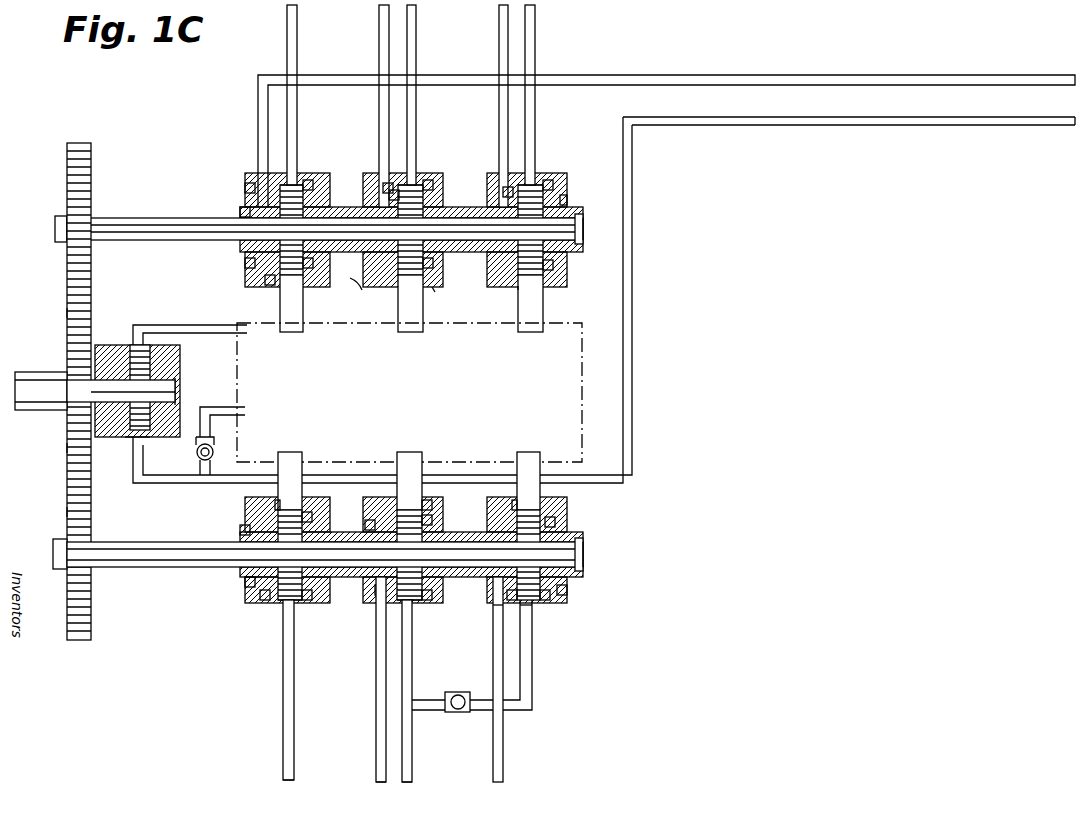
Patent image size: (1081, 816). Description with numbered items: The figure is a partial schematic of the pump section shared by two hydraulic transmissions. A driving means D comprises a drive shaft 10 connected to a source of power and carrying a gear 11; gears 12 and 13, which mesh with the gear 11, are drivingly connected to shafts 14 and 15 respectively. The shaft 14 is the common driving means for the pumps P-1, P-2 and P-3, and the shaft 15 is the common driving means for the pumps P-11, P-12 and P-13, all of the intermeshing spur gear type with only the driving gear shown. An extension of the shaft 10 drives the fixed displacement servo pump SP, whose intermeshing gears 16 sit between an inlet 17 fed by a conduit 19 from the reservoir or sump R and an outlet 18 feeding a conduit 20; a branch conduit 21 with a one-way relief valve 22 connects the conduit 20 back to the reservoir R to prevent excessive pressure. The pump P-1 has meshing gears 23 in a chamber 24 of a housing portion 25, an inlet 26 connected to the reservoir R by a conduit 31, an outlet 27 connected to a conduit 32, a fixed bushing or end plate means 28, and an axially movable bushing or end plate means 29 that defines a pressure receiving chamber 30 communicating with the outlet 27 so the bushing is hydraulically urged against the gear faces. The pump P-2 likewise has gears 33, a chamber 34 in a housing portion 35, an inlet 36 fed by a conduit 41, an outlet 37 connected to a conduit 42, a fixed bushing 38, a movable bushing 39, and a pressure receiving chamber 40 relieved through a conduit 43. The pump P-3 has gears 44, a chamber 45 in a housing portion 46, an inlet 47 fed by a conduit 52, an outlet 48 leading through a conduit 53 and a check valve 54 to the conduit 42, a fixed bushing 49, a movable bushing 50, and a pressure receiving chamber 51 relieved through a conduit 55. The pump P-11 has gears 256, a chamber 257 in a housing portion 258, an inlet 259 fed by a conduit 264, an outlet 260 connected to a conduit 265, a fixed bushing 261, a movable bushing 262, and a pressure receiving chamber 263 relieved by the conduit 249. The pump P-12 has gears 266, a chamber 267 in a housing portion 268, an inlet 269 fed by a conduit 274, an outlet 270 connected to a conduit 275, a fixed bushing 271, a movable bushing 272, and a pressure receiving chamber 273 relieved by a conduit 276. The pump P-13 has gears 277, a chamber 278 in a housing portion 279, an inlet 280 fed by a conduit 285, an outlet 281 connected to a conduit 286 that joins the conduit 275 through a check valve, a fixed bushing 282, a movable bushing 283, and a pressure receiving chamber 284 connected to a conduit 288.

The drive shaft 10 is at (35, 372).
The gear 11 is at (67, 448).
The gear 12 is at (67, 512).
The gear 13 is at (67, 172).
The shaft 14 is at (145, 568).
The shaft 15 is at (142, 218).
The intermeshing gears 16 is at (178, 390).
The inlet 17 is at (150, 350).
The outlet 18 is at (132, 436).
The conduit 19 is at (200, 325).
The conduit 20 is at (1052, 125).
The branch conduit 21 is at (196, 458).
The one-way relief valve 22 is at (218, 440).
The meshing gears 23 is at (280, 604).
The chamber 24 is at (305, 600).
The housing portion 25 is at (242, 528).
The inlet 26 is at (280, 505).
The outlet 27 is at (291, 608).
The fixed bushing or end plate means 28 is at (305, 518).
The axially movable bushing or end plate means 29 is at (250, 581).
The pressure receiving chamber 30 is at (268, 600).
The conduit 31 is at (291, 460).
The conduit 32 is at (283, 768).
The intermeshing gears 33 is at (420, 604).
The chamber 34 is at (423, 598).
The housing portion 35 is at (368, 528).
The inlet 36 is at (423, 506).
The outlet 37 is at (410, 612).
The fixed bushing or end plate means 38 is at (430, 522).
The axially movable bushing or end plate means 39 is at (380, 598).
The pressure receiving chamber 40 is at (380, 604).
The conduit 41 is at (406, 460).
The conduit 42 is at (412, 772).
The conduit 43 is at (376, 768).
The intermeshing gears 44 is at (545, 607).
The chamber 45 is at (555, 523).
The housing portion 46 is at (585, 540).
The inlet 47 is at (522, 504).
The outlet 48 is at (530, 612).
The fixed bushing or end plate means 49 is at (565, 592).
The axially movable bushing or end plate means 50 is at (517, 603).
The pressure receiving chamber 51 is at (500, 608).
The conduit 52 is at (529, 460).
The conduit 53 is at (532, 682).
The check valve 54 is at (458, 714).
The conduit 55 is at (503, 768).
The conduit 249 is at (1041, 75).
The intermeshing gears 256 is at (306, 182).
The chamber 257 is at (306, 262).
The housing portion 258 is at (240, 214).
The inlet 259 is at (272, 283).
The outlet 260 is at (285, 183).
The fixed bushing or end plate means 261 is at (305, 272).
The axially movable bushing or end plate means 262 is at (248, 265).
The pressure receiving chamber 263 is at (247, 188).
The conduit 264 is at (292, 332).
The conduit 265 is at (287, 10).
The intermeshing gears 266 is at (428, 184).
The chamber 267 is at (425, 260).
The housing portion 268 is at (370, 293).
The inlet 269 is at (435, 292).
The outlet 270 is at (413, 183).
The fixed bushing or end plate means 271 is at (425, 268).
The axially movable bushing or end plate means 272 is at (395, 195).
The pressure receiving chamber 273 is at (388, 185).
The conduit 274 is at (417, 332).
The conduit 275 is at (416, 14).
The conduit 276 is at (379, 22).
The intermeshing gears 277 is at (548, 184).
The chamber 278 is at (548, 266).
The housing portion 279 is at (570, 200).
The inlet 280 is at (540, 276).
The outlet 281 is at (533, 183).
The fixed bushing or end plate means 282 is at (583, 231).
The axially movable bushing or end plate means 283 is at (518, 290).
The pressure receiving chamber 284 is at (505, 191).
The conduit 285 is at (530, 332).
The conduit 286 is at (535, 19).
The conduit 288 is at (499, 34).
The pressure loadable pump P-1 is at (312, 508).
The pressure loadable pump P-2 is at (430, 508).
The pressure loadable pump P-3 is at (550, 508).
The pressure loadable pump P-11 is at (318, 288).
The pressure loadable pump P-12 is at (435, 288).
The pressure loadable pump P-13 is at (552, 288).
The servo pump SP is at (110, 343).
The reservoir or sump R is at (587, 396).
The driving means D is at (60, 312).